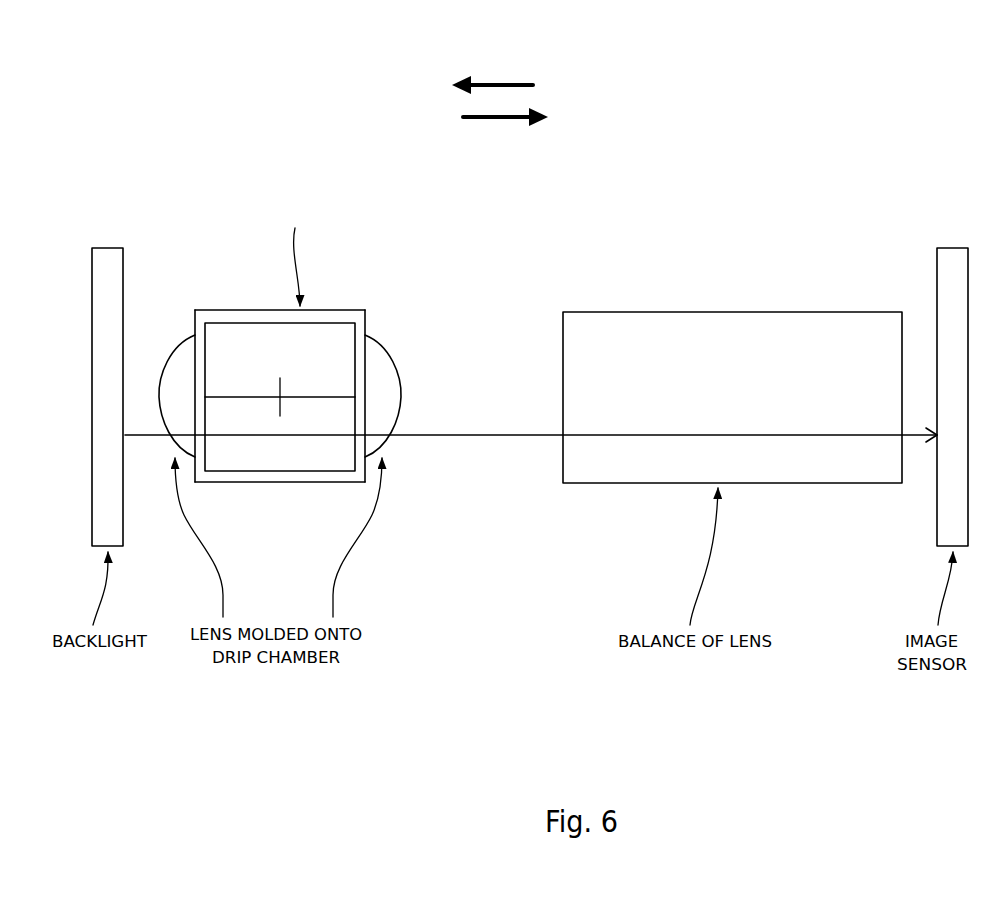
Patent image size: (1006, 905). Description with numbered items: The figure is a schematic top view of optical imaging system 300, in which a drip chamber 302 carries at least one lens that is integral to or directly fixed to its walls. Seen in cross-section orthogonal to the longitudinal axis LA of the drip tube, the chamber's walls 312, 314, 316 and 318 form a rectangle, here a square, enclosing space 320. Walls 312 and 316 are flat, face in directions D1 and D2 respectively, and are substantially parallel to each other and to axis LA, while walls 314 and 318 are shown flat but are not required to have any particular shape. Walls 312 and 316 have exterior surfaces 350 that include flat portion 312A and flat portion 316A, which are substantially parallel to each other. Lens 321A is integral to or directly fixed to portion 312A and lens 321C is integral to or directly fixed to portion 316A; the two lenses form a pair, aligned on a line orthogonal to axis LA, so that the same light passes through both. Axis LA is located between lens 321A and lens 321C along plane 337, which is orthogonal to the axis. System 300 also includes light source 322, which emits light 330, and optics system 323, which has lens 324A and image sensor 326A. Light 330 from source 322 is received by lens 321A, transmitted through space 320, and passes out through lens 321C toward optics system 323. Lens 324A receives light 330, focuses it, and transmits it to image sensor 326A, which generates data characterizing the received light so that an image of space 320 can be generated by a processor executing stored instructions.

The optical imaging system 300 is at (850, 80).
The drip chamber 302 is at (286, 122).
The direction D1 is at (496, 82).
The direction D2 is at (496, 120).
The wall 312 is at (195, 471).
The flat portion 312A is at (194, 378).
The wall 314 is at (325, 310).
The wall 316 is at (365, 471).
The flat portion 316A is at (365, 377).
The wall 318 is at (295, 483).
The space 320 is at (260, 336).
The lens 321A is at (188, 316).
The lens 321C is at (372, 318).
The light source 322 is at (92, 488).
The optics system 323 is at (735, 286).
The lens 324A is at (726, 379).
The image sensor 326A is at (953, 247).
The light 330 is at (470, 436).
The plane 337 is at (313, 397).
The exterior surface 350 is at (370, 318).
The longitudinal axis LA is at (278, 397).